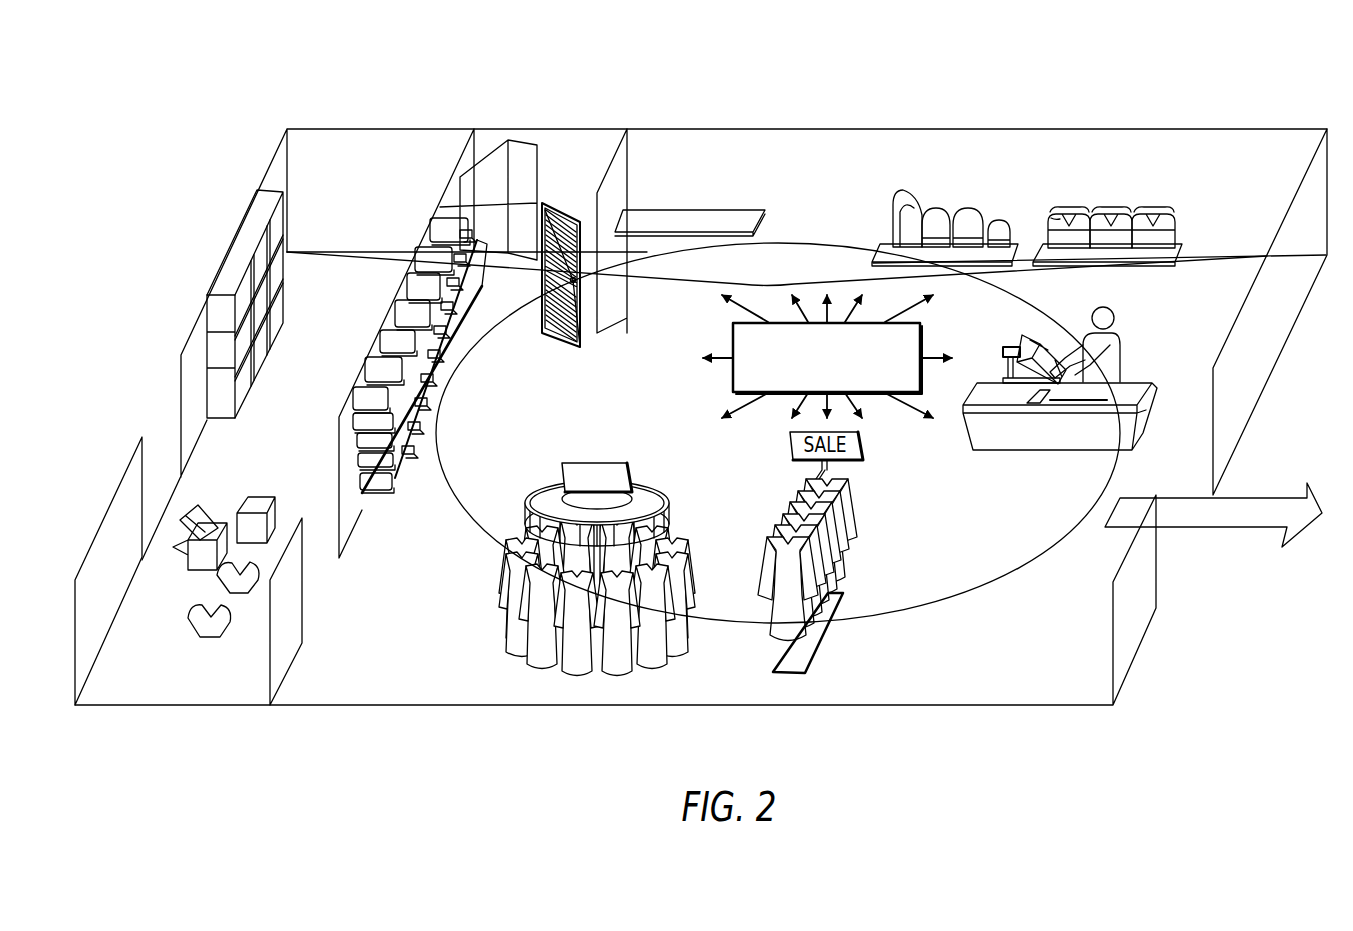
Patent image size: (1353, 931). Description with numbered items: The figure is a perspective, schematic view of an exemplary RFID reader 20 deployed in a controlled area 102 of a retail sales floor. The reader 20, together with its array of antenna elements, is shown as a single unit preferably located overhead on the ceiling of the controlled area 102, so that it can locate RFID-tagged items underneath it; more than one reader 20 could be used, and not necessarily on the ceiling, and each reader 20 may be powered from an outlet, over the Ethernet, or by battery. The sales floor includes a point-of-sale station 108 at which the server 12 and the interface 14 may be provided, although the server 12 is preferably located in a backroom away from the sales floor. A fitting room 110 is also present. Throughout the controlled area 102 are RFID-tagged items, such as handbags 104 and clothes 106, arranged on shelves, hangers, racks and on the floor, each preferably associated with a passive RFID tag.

The server 12 is at (1037, 350).
The interface 14 is at (1022, 333).
The RFID reader 20 is at (773, 397).
The controlled area 102 is at (1003, 707).
The handbags 104 is at (892, 190).
The clothes 106 is at (518, 678).
The point-of-sale station 108 is at (1153, 368).
The fitting room 110 is at (578, 150).